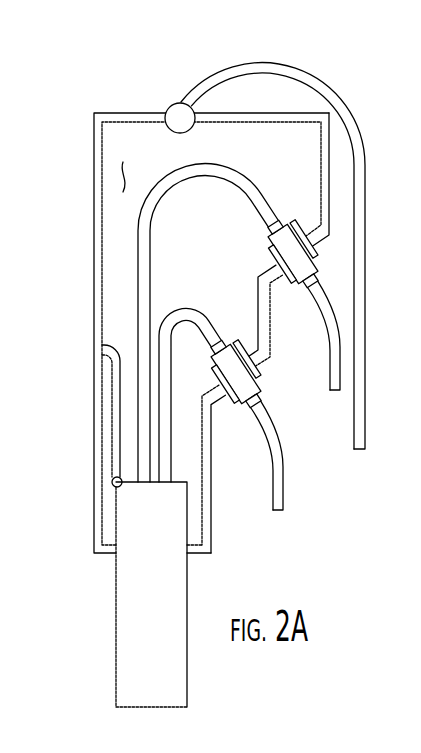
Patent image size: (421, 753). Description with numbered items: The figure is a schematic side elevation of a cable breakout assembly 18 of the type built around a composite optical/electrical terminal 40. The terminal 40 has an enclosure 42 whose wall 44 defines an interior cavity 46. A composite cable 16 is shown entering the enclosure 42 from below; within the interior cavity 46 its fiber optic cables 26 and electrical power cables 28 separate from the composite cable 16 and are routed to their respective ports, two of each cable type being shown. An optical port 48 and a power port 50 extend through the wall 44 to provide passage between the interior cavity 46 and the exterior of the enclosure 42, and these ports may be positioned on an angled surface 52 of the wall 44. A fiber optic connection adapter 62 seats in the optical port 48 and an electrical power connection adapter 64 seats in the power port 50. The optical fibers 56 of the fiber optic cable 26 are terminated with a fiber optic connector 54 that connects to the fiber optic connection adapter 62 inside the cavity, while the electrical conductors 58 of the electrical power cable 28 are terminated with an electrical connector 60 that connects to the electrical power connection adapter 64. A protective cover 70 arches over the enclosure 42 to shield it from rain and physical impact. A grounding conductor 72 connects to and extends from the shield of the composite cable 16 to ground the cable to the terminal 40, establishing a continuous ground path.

The composite cable 16 is at (187, 585).
The breakout assembly 18 is at (142, 58).
The fiber optic cable 26 is at (262, 221).
The electrical power cable 28 is at (193, 310).
The composite optical/electrical terminal 40 is at (140, 113).
The enclosure 42 is at (94, 190).
The wall 44 is at (328, 155).
The interior cavity 46 is at (122, 185).
The optical port 48 is at (314, 236).
The power port 50 is at (247, 343).
The angled surface 52 is at (283, 286).
The fiber optic connector 54 is at (291, 225).
The optical fiber 56 is at (270, 248).
The electrical conductor 58 is at (214, 346).
The electrical connector 60 is at (214, 364).
The fiber optic connection adapter 62 is at (316, 264).
The electrical power connection adapter 64 is at (263, 396).
The protective cover 70 is at (323, 84).
The grounding conductor 72 is at (112, 387).